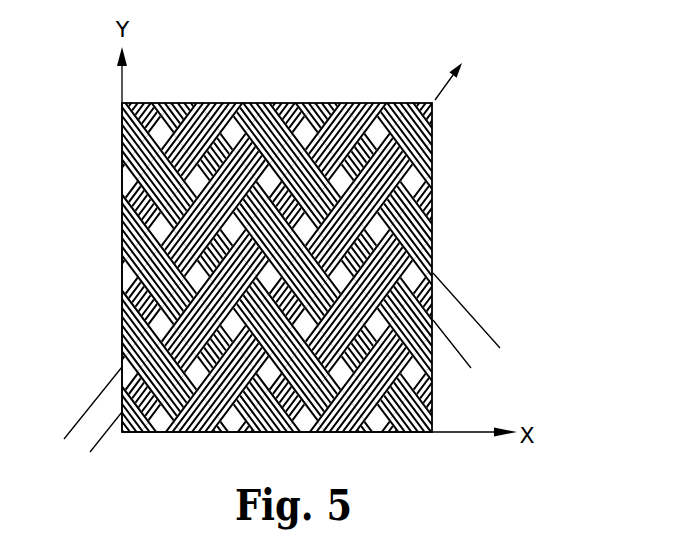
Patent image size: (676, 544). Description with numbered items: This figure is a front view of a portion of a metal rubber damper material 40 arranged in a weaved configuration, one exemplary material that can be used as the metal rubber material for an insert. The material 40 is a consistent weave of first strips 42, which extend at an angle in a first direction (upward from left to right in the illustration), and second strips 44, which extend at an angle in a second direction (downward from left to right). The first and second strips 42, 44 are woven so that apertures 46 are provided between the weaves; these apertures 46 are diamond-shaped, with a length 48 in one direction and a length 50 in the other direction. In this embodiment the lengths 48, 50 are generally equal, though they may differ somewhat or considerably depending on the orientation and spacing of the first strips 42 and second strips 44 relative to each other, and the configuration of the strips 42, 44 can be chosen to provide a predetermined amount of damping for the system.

The material 40 is at (298, 272).
The first strips 42 is at (205, 107).
The second strips 44 is at (230, 138).
The apertures 46 is at (413, 183).
The length 48 is at (535, 318).
The length 50 is at (40, 417).